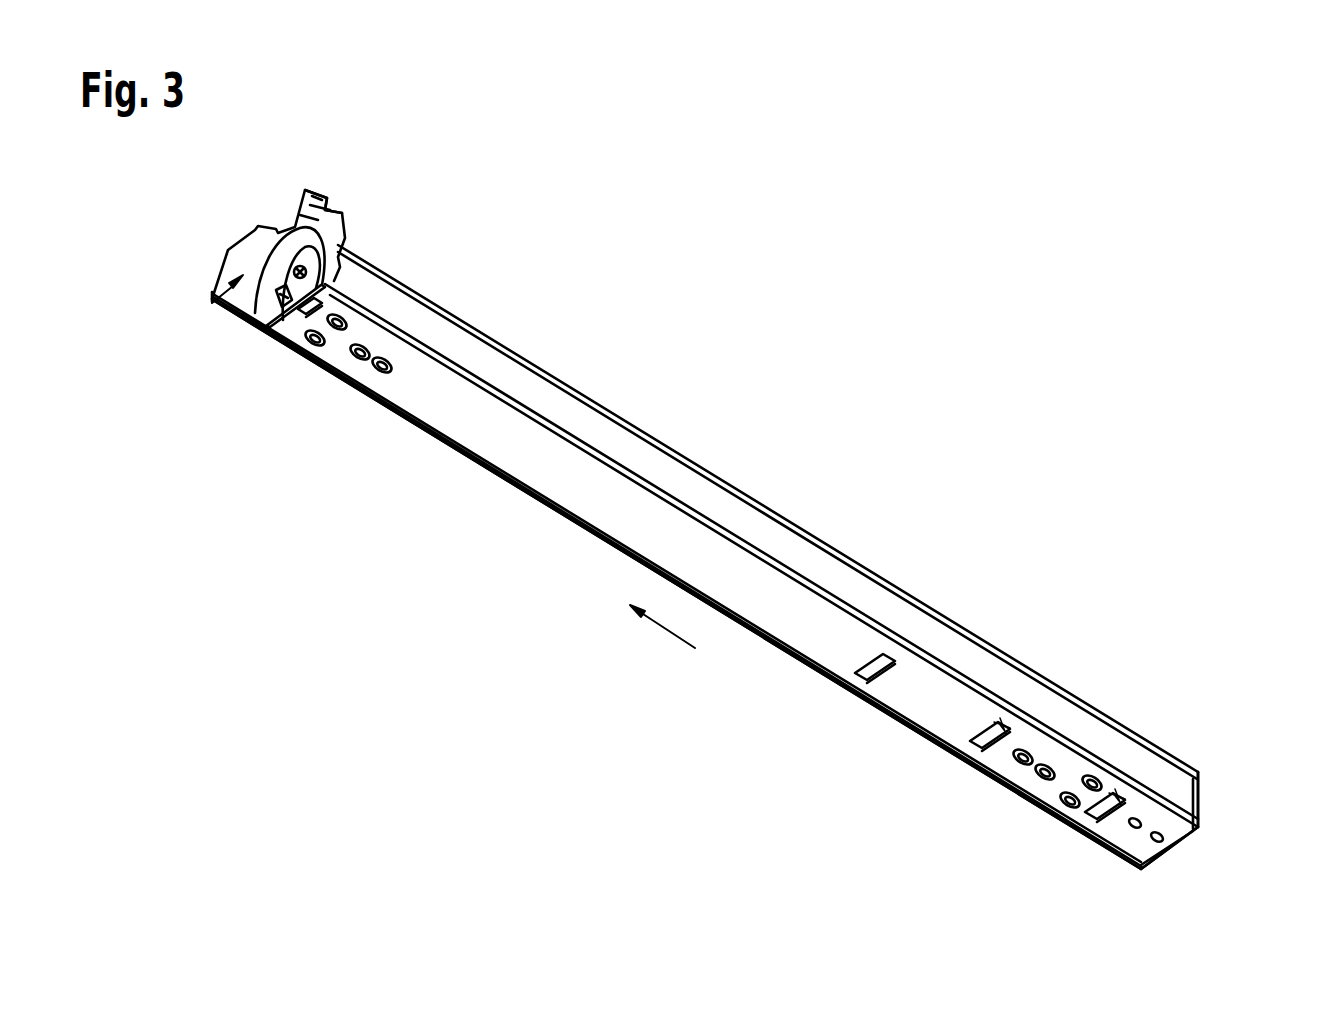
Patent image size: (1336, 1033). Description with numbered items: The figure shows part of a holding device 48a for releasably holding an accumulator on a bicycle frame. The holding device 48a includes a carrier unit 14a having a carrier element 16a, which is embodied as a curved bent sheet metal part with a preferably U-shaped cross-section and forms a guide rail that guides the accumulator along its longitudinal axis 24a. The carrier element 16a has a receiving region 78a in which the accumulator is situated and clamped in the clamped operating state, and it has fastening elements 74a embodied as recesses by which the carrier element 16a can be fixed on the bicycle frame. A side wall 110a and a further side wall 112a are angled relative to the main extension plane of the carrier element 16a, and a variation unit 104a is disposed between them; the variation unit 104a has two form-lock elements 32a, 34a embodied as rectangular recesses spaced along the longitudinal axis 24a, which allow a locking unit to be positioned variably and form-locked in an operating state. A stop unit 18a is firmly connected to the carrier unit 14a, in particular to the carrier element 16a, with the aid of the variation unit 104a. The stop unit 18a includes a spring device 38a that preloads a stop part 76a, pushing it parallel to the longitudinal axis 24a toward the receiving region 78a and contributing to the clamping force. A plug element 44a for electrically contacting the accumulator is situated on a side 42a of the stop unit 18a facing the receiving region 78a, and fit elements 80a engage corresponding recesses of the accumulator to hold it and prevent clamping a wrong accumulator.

The carrier unit 14a is at (766, 562).
The carrier element 16a is at (800, 627).
The stop unit 18a is at (305, 254).
The longitudinal axis 24a is at (672, 638).
The form-lock element 32a is at (1122, 770).
The form-lock element 34a is at (1008, 710).
The spring device 38a is at (212, 305).
The side 42a is at (307, 316).
The plug element 44a is at (301, 274).
The holding device 48a is at (655, 297).
The fastening elements 74a is at (384, 360).
The stop part 76a is at (332, 230).
The receiving region 78a is at (631, 496).
The fit elements 80a is at (277, 330).
The variation unit 104a is at (1005, 810).
The side wall 110a is at (1185, 794).
The further side wall 112a is at (1118, 855).